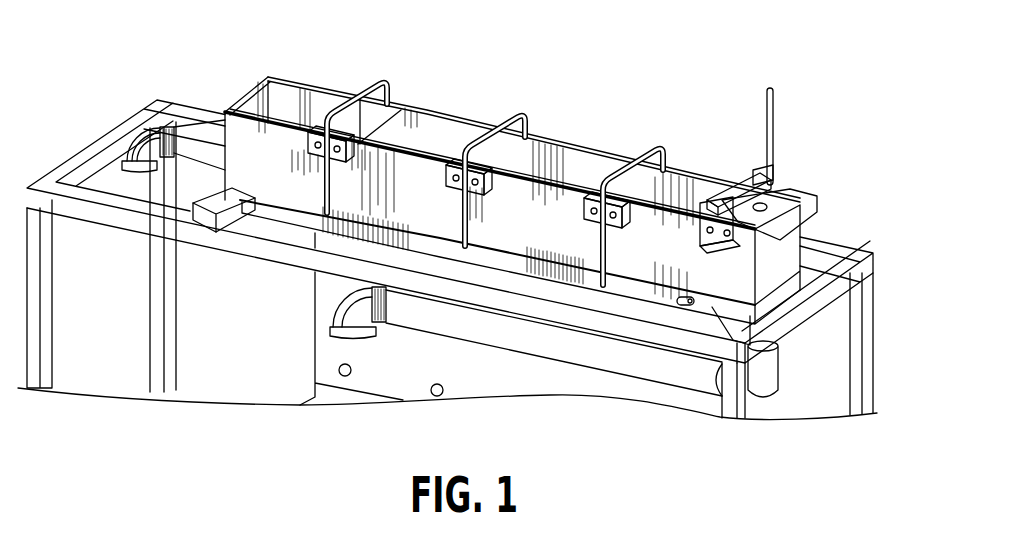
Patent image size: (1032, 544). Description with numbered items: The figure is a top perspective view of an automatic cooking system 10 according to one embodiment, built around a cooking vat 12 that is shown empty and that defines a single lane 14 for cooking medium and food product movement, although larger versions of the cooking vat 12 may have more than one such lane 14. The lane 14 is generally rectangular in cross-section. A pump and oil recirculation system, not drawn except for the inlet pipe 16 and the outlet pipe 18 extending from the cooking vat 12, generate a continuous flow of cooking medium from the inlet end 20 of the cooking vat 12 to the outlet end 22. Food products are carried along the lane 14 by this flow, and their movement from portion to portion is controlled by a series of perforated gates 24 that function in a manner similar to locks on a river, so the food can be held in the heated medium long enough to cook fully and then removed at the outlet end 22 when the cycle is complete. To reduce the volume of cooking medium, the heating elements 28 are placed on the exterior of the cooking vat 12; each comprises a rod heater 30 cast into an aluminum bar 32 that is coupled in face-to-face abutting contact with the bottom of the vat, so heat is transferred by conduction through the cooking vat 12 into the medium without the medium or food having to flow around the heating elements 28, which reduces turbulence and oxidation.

The automatic cooking system 10 is at (297, 56).
The cooking vat 12 is at (448, 110).
The lane 14 is at (573, 160).
The inlet pipe 16 is at (147, 127).
The outlet pipe 18 is at (772, 355).
The inlet end 20 is at (262, 84).
The outlet end 22 is at (775, 252).
The gates 24 is at (375, 84).
The heating elements 28 is at (515, 277).
The rod heater 30 is at (688, 303).
The aluminum bar 32 is at (607, 286).